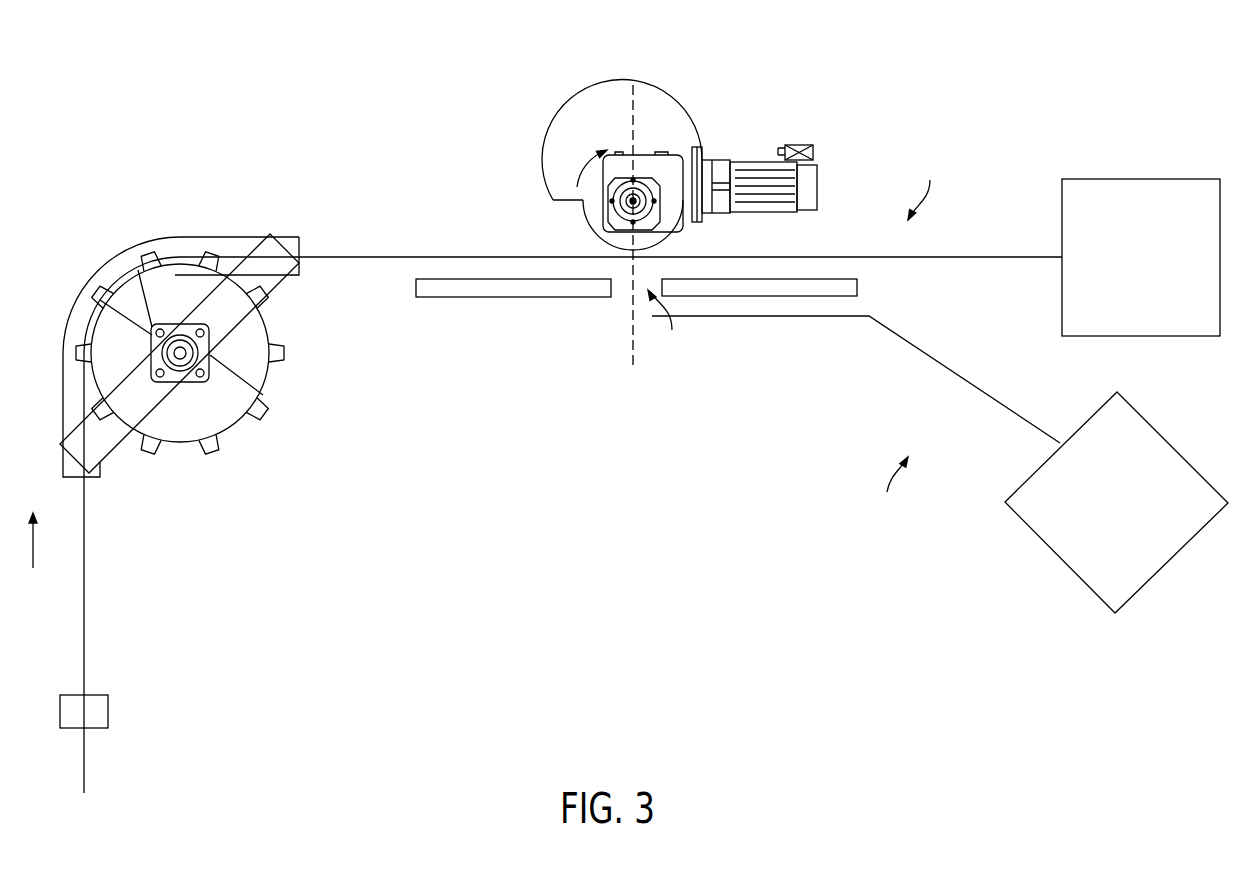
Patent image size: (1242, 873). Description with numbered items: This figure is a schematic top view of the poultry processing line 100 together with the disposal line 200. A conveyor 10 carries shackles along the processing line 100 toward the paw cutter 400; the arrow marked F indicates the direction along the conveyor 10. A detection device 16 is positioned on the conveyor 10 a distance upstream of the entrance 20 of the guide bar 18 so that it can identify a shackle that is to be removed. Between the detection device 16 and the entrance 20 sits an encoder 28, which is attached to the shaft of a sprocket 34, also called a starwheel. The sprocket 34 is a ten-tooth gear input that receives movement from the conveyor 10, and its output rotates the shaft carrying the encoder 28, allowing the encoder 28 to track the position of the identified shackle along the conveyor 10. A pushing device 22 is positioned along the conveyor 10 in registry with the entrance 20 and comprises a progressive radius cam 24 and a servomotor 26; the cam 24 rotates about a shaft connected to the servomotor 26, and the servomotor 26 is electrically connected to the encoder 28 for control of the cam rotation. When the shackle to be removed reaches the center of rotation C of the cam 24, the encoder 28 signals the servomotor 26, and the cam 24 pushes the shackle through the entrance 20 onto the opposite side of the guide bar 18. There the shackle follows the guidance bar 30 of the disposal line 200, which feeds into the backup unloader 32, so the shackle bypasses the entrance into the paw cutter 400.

The conveyor 10 is at (370, 257).
The detection device 16 is at (98, 712).
The guide bar 18 is at (513, 288).
The entrance 20 is at (664, 323).
The pushing device 22 is at (708, 88).
The progressive radius cam 24 is at (577, 162).
The servomotor 26 is at (815, 170).
The encoder 28 is at (240, 378).
The guidance bar 30 is at (750, 316).
The backup unloader 32 is at (1107, 514).
The sprocket 34 is at (230, 420).
The poultry processing line 100 is at (927, 186).
The disposal line 200 is at (890, 491).
The paw cutter 400 is at (1128, 268).
The center of rotation C is at (632, 322).
The feed direction F is at (32, 559).